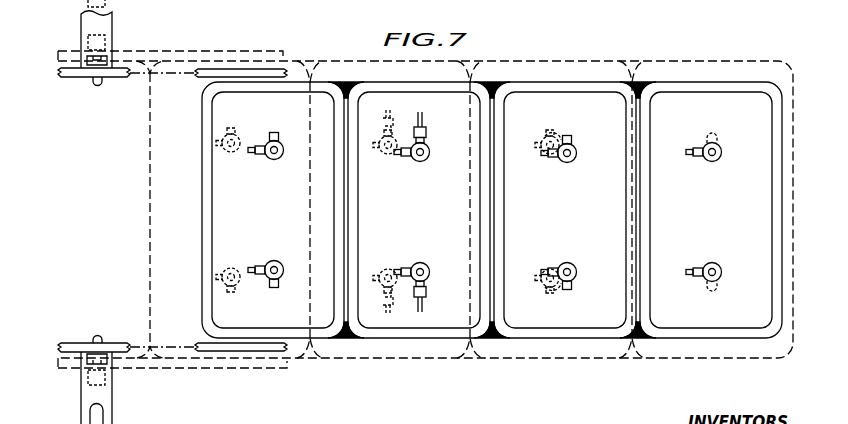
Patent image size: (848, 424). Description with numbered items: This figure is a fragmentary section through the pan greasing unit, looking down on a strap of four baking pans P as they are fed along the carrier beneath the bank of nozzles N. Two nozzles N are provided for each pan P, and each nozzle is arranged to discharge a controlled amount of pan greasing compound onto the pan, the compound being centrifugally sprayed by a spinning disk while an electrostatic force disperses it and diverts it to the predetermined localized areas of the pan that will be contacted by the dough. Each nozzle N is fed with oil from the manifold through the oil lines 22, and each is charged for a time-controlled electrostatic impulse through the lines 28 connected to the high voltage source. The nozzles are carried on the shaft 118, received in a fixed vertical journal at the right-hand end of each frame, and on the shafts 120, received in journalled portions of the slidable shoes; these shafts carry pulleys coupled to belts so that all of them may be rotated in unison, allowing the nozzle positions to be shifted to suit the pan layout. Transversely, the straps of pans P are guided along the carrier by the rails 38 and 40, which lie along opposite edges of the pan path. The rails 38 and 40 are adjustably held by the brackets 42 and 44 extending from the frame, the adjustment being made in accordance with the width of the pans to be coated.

The oil lines 22 is at (424, 114).
The lines 28 is at (251, 153).
The rail 38 is at (118, 78).
The rail 40 is at (119, 342).
The bracket 42 is at (105, 30).
The bracket 44 is at (103, 393).
The shaft 118 is at (722, 150).
The shafts 120 is at (281, 142).
The nozzles N is at (502, 208).
The pans P is at (556, 343).